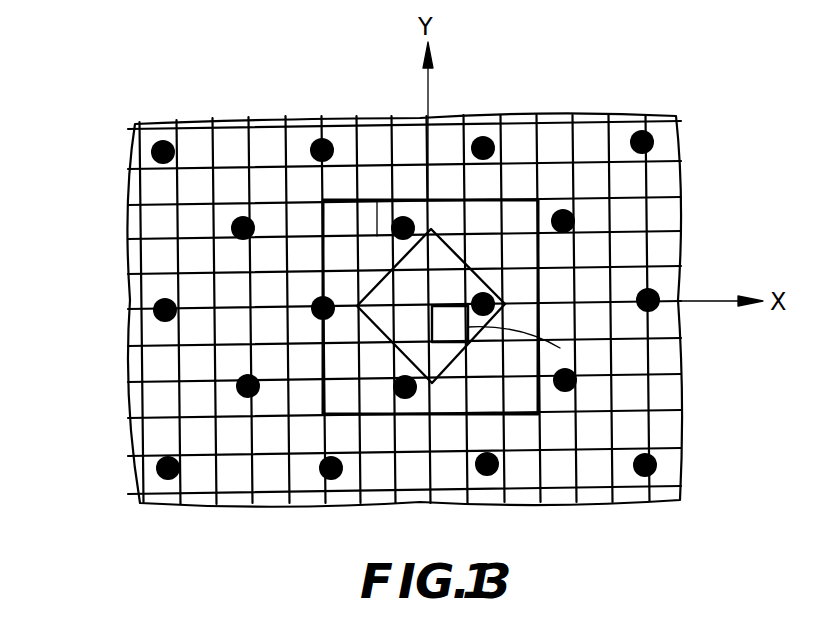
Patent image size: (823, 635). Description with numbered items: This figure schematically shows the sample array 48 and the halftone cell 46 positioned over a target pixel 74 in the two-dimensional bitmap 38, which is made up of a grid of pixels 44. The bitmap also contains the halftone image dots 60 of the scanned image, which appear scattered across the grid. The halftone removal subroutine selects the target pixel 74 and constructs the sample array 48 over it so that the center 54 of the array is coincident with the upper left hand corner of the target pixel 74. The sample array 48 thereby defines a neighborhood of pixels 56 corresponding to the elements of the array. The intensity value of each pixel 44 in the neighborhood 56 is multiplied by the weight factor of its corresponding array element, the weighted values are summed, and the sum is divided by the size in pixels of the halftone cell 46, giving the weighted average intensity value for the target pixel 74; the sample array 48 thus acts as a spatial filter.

The bitmap 38 is at (127, 302).
The pixels 44 is at (180, 437).
The halftone cell 46 is at (503, 292).
The sample array 48 is at (513, 200).
The center of the array 54 is at (432, 307).
The neighborhood of pixels 56 is at (377, 195).
The halftone image dots 60 is at (655, 140).
The target pixel 74 is at (560, 348).